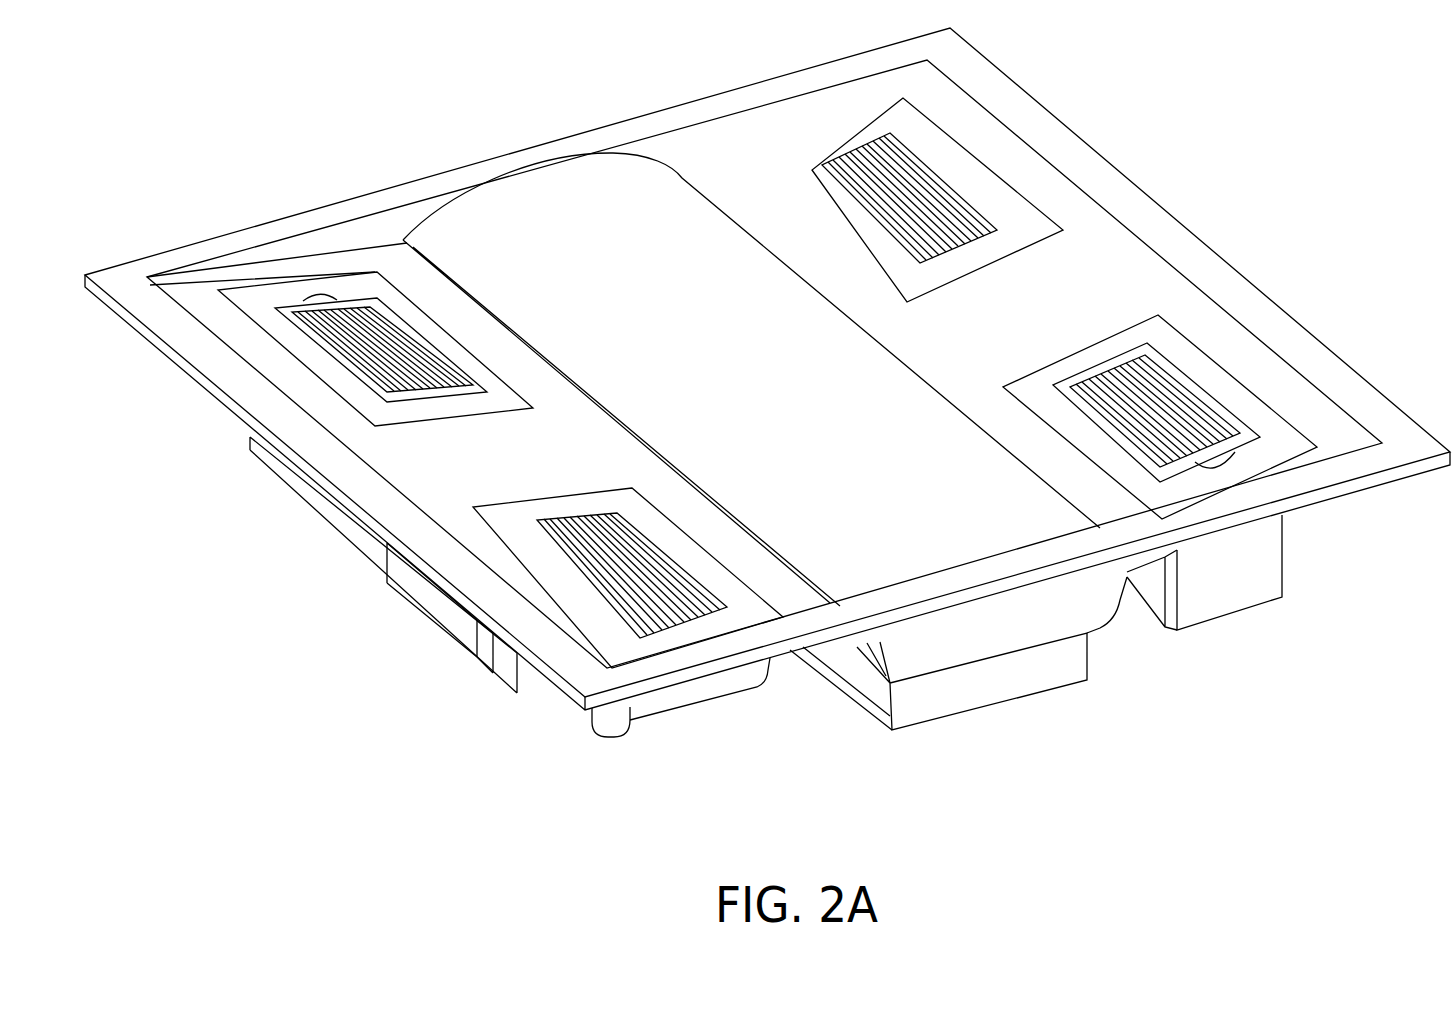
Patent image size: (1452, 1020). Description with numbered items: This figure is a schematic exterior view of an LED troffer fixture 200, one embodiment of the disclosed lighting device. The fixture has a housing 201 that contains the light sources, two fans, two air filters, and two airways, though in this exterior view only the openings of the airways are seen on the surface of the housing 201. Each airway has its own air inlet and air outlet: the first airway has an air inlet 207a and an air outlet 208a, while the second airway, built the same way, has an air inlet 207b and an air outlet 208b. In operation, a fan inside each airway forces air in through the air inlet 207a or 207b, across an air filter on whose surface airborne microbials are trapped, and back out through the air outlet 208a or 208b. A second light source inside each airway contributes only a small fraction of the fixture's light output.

The LED troffer fixture 200 is at (718, 432).
The housing 201 is at (455, 177).
The air inlet 207a is at (1167, 373).
The air inlet 207b is at (365, 370).
The air outlet 208a is at (932, 177).
The air outlet 208b is at (590, 552).